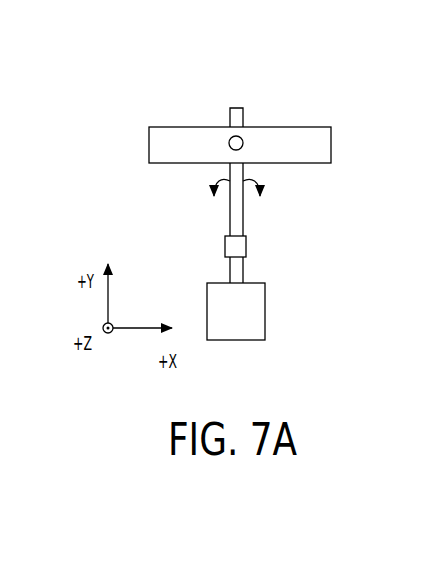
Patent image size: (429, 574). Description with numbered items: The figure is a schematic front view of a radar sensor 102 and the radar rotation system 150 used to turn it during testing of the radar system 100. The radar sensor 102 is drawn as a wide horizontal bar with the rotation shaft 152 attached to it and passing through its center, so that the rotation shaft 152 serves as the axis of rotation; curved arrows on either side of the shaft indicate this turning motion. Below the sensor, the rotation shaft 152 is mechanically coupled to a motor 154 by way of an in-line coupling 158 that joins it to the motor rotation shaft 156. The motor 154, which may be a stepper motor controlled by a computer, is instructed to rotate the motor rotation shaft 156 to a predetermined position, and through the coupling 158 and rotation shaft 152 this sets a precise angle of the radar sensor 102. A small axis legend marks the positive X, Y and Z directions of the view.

The radar system 100 is at (336, 122).
The radar sensor 102 is at (243, 145).
The radar rotation system 150 is at (349, 211).
The rotation shaft 152 is at (237, 107).
The motor 154 is at (268, 313).
The motor rotation shaft 156 is at (243, 275).
The coupling 158 is at (247, 247).